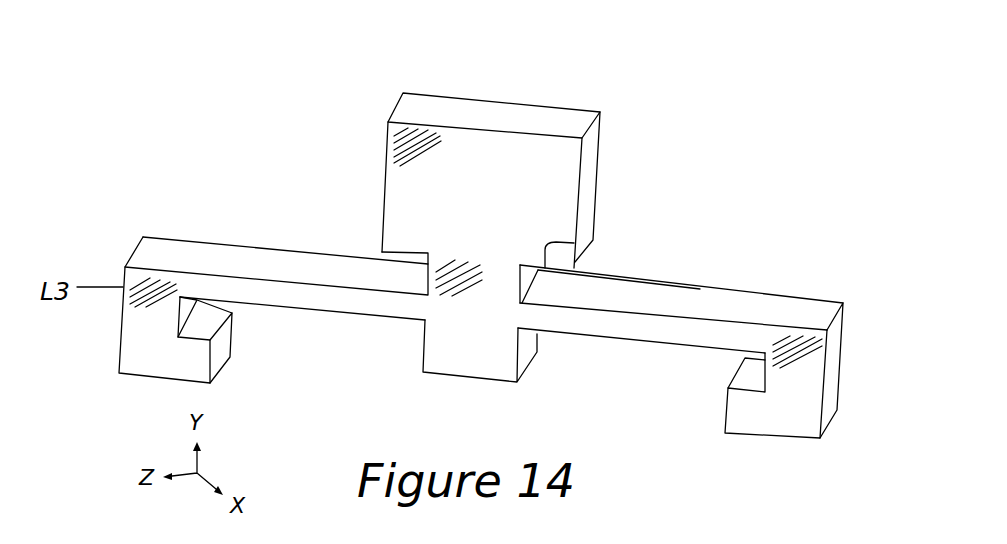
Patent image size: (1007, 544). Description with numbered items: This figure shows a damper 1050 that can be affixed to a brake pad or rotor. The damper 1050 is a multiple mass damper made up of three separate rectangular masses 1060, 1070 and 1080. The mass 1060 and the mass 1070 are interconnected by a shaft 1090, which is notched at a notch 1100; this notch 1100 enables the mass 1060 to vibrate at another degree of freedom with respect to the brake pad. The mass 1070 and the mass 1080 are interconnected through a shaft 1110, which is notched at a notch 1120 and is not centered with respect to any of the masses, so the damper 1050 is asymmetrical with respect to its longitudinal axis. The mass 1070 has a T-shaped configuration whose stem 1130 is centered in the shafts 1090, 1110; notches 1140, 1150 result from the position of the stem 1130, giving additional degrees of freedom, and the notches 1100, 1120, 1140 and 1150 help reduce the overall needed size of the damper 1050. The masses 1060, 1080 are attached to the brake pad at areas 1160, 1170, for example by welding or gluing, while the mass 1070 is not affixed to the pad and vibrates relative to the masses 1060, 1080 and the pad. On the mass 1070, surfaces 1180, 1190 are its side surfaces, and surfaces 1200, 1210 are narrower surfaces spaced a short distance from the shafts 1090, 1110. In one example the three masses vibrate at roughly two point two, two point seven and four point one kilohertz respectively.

The damper 1050 is at (745, 216).
The mass 1060 is at (135, 372).
The mass 1070 is at (487, 107).
The mass 1080 is at (765, 432).
The shaft 1090 is at (285, 296).
The notch 1100 is at (178, 316).
The shaft 1110 is at (582, 327).
The notch 1120 is at (767, 370).
The stem 1130 is at (423, 345).
The notch 1140 is at (433, 279).
The notch 1150 is at (522, 283).
The attachment area 1160 is at (224, 395).
The attachment area 1170 is at (730, 446).
The surface 1180 is at (372, 176).
The surface 1190 is at (590, 175).
The surface 1200 is at (402, 252).
The surface 1210 is at (577, 243).